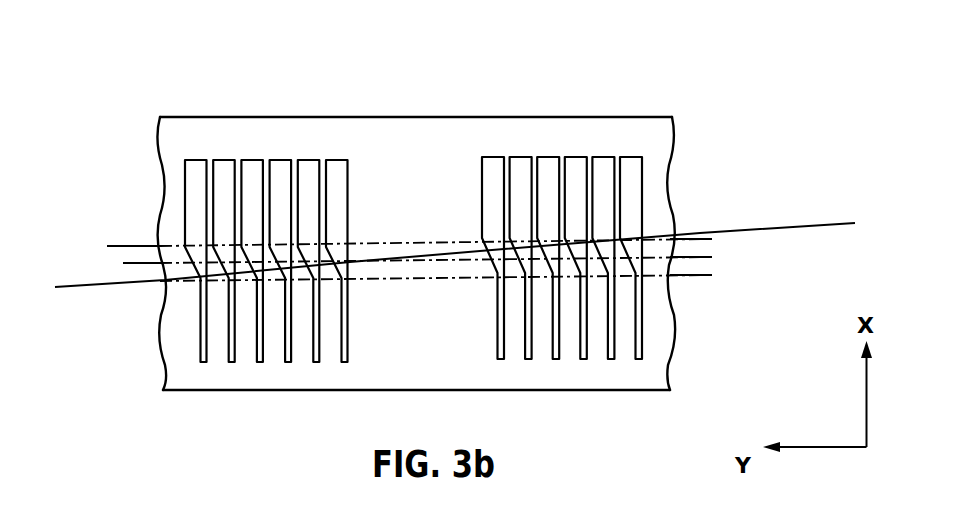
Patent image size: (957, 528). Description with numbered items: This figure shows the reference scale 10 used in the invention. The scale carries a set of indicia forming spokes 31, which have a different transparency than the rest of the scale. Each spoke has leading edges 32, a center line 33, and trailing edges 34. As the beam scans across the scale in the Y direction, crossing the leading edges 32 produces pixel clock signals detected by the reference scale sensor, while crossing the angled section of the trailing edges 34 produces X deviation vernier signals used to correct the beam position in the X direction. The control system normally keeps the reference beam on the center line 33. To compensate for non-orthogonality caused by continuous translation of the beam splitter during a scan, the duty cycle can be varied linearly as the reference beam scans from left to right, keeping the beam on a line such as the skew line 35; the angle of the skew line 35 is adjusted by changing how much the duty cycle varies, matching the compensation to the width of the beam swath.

The reference scale 10 is at (424, 136).
The spokes 31 is at (230, 160).
The leading edges 32 is at (641, 157).
The center line 33 is at (400, 252).
The trailing edges 34 is at (499, 274).
The skew line 35 is at (772, 197).